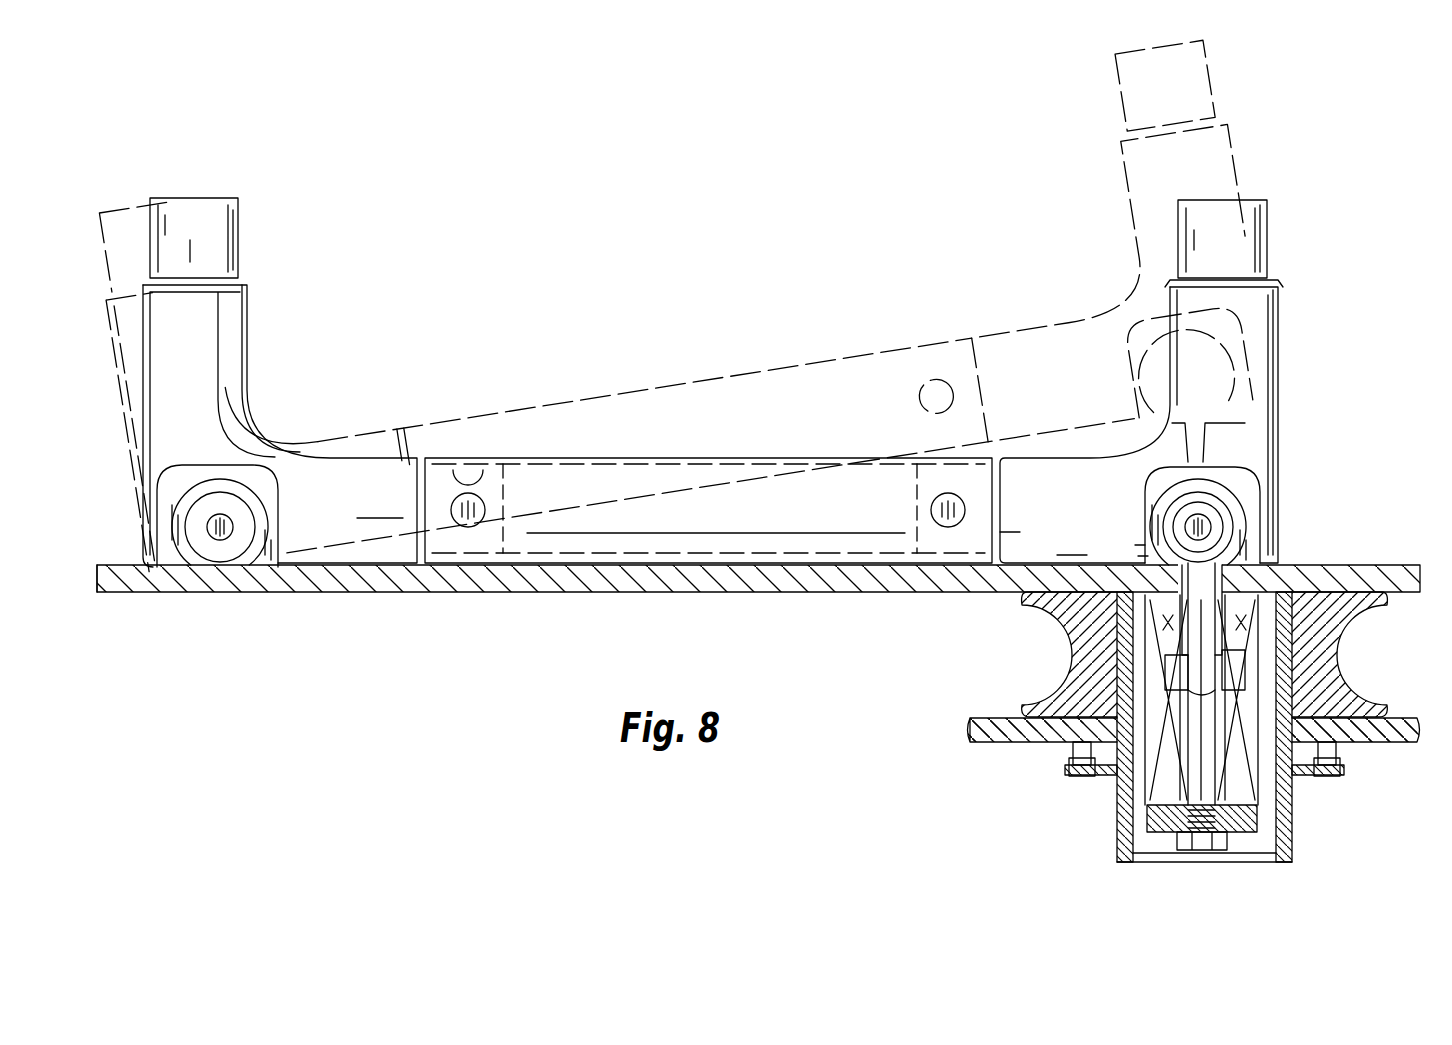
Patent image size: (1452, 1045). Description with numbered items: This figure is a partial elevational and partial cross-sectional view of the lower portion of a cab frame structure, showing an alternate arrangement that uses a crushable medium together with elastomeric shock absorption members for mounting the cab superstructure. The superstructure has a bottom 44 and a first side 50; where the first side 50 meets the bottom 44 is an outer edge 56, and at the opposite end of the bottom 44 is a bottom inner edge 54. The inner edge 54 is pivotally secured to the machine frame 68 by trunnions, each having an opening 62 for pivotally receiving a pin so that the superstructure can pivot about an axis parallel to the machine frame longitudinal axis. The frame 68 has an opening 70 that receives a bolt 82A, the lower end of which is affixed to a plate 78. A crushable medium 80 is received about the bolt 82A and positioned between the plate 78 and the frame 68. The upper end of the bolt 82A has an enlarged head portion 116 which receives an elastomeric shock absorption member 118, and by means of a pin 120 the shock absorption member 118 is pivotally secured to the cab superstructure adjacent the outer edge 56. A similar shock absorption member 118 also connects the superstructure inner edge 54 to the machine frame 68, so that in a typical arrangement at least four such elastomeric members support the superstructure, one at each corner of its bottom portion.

The bottom 44 is at (1044, 563).
The first side 50 is at (1280, 462).
The bottom inner edge 54 is at (148, 560).
The outer edge 56 is at (1280, 560).
The opening 62 is at (233, 527).
The frame 68 is at (1398, 565).
The opening 70 is at (1175, 552).
The plate 78 is at (1257, 825).
The crushable medium 80 is at (1252, 783).
The bolt 82A is at (1198, 778).
The enlarged head portion 116 is at (1247, 515).
The elastomeric shock absorption member 118 is at (250, 520).
The pin 120 is at (1188, 518).